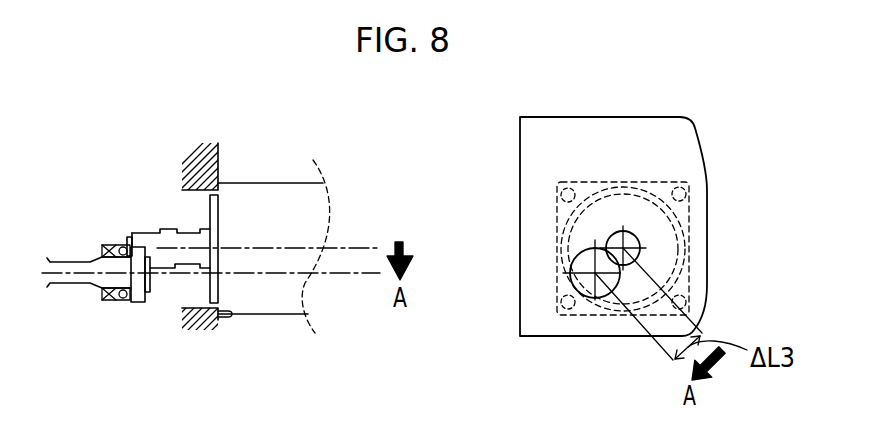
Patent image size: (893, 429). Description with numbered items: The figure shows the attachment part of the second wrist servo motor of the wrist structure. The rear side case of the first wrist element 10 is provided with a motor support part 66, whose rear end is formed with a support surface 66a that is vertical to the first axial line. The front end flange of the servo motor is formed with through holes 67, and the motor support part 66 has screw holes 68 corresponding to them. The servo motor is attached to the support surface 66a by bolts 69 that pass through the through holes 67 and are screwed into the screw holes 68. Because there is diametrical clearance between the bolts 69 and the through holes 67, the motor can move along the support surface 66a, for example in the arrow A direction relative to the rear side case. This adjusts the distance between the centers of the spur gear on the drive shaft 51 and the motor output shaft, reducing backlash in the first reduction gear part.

The first wrist element 10 is at (689, 158).
The drive shaft 51 is at (70, 262).
The motor support part 66 is at (200, 152).
The support surface 66a is at (221, 317).
The through holes 67 is at (676, 248).
The screw holes 68 is at (690, 197).
The bolts 69 is at (563, 315).